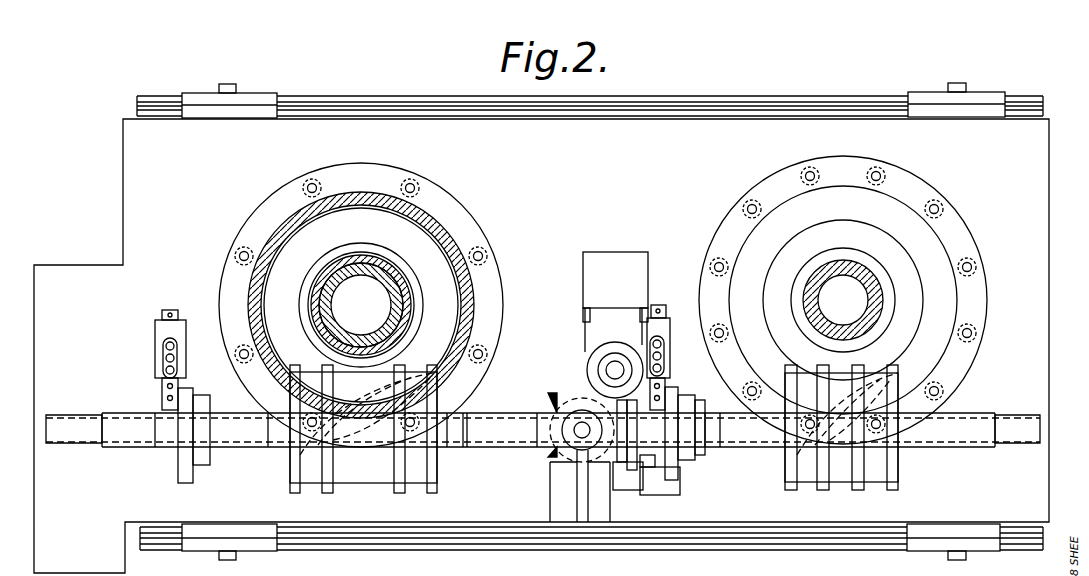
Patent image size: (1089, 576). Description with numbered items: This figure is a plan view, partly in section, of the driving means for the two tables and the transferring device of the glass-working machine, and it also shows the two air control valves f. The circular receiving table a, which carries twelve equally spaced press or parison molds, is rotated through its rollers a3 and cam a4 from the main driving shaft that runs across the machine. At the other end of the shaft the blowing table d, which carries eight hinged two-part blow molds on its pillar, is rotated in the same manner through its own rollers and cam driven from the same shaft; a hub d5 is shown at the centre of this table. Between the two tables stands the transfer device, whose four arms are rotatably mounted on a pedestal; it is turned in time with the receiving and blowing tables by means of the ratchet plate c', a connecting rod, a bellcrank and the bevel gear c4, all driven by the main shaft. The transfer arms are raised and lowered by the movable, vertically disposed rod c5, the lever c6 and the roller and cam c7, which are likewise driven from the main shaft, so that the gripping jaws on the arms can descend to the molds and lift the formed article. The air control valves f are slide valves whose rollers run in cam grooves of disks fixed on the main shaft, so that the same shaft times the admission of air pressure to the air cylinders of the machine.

The receiving table a is at (946, 221).
The rollers a3 is at (778, 454).
The cam a4 is at (843, 430).
The blowing table d is at (492, 301).
The hub d5 is at (396, 295).
The air control valves f is at (184, 392).
The bevel gear c4 is at (556, 446).
The vertically disposed rod c5 is at (608, 368).
The lever c6 is at (600, 381).
The roller and cam c7 is at (600, 398).
The ratchet plate c' is at (659, 449).